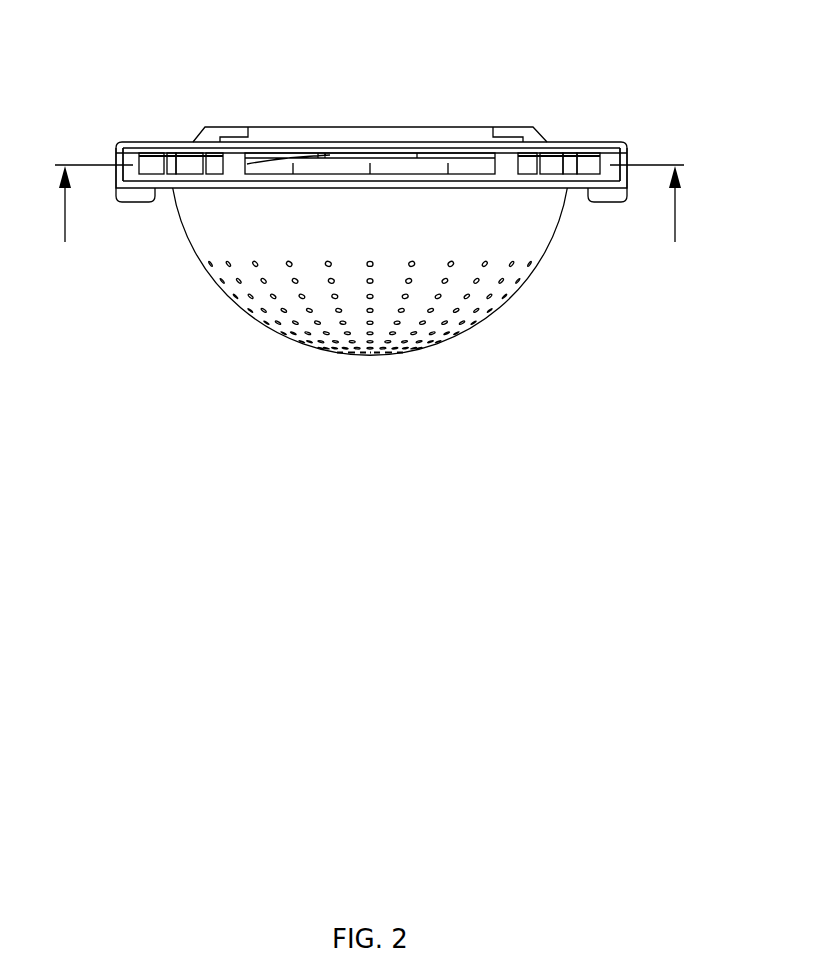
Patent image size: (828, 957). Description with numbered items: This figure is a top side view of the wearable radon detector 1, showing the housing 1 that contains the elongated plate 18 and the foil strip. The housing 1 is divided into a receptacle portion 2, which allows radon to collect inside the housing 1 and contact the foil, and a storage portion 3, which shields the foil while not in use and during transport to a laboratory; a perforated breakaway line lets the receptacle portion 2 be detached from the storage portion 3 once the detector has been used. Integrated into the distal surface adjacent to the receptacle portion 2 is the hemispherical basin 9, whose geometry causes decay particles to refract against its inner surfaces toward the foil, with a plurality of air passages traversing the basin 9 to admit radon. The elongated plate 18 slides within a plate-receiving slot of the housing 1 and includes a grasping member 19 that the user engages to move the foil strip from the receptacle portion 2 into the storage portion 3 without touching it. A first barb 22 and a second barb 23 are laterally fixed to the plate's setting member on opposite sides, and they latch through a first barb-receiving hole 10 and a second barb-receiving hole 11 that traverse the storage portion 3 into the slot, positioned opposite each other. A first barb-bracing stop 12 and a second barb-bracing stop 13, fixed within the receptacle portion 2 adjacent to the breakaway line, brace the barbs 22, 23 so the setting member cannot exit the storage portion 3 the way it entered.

The housing 1 is at (514, 308).
The receptacle portion 2 is at (600, 196).
The storage portion 3 is at (270, 83).
The hemispherical basin 9 is at (188, 233).
The first barb-receiving hole 10 is at (158, 157).
The second barb-receiving hole 11 is at (583, 153).
The first barb-bracing stop 12 is at (123, 157).
The second barb-bracing stop 13 is at (615, 157).
The elongated plate 18 is at (600, 162).
The grasping member 19 is at (347, 167).
The first barb 22 is at (170, 157).
The second barb 23 is at (570, 160).